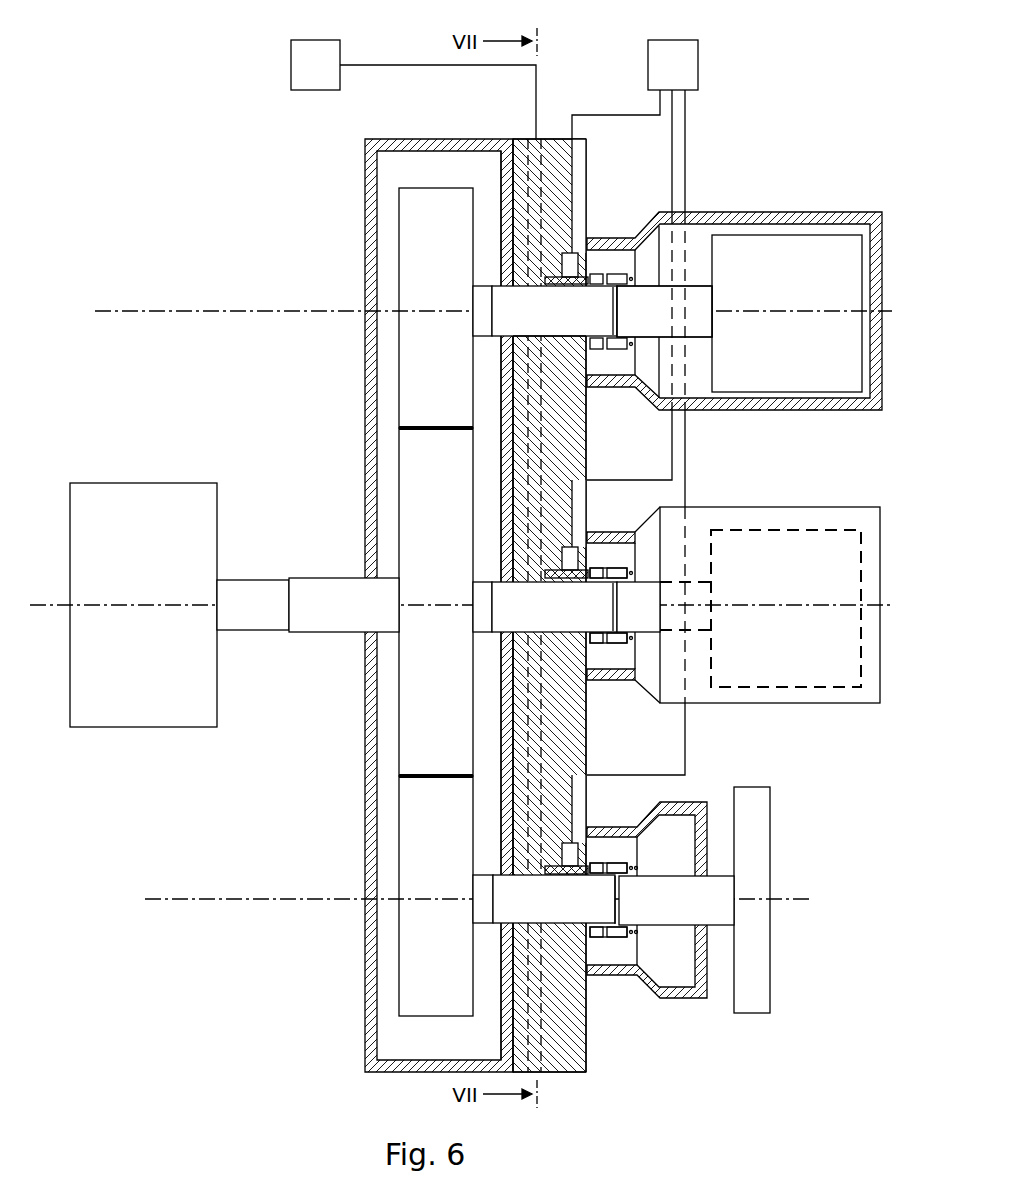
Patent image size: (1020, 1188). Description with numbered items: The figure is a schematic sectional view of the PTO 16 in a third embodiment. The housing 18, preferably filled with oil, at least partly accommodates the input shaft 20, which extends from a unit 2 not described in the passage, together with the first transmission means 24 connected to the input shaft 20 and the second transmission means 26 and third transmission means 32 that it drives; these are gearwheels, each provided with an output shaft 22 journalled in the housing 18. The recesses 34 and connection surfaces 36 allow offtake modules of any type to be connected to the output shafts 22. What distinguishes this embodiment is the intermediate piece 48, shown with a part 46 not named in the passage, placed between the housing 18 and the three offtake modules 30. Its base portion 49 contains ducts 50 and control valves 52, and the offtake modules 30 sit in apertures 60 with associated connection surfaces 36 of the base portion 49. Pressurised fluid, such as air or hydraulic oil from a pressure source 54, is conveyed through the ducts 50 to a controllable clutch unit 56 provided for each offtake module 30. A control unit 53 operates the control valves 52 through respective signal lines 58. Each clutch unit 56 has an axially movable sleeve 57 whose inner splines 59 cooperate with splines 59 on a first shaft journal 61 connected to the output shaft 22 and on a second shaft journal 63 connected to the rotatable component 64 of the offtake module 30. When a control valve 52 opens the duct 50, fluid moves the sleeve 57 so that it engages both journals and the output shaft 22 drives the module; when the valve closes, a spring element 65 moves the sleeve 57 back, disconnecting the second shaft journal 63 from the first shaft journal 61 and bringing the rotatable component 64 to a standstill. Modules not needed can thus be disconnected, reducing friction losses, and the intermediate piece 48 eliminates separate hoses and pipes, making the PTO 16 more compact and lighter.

The drive motor 2 is at (120, 483).
The power take-off (PTO) 16 is at (603, 97).
The housing 18 is at (365, 139).
The input shaft 20 is at (330, 578).
The output shaft 22 is at (484, 283).
The first transmission means 24 is at (399, 457).
The second transmission means 26 is at (399, 225).
The offtake module 30 is at (738, 213).
The third transmission means 32 is at (399, 835).
The recess 34 is at (503, 923).
The connection surface 36 is at (542, 930).
The mounting plate 46 is at (522, 1050).
The intermediate piece 48 is at (587, 172).
The base portion 49 is at (586, 1040).
The duct 50 is at (545, 150).
The control valve 52 is at (576, 253).
The control unit 53 is at (698, 65).
The pressure source 54 is at (291, 65).
The controllable clutch unit 56 is at (625, 350).
The axially movable sleeve 57 is at (605, 865).
The signal line 58 is at (686, 160).
The splines 59 is at (627, 580).
The aperture 60 is at (555, 945).
The first shaft journal 61 is at (557, 328).
The second shaft journal 63 is at (648, 285).
The rotatable component 64 is at (790, 235).
The spring element 65 is at (660, 828).